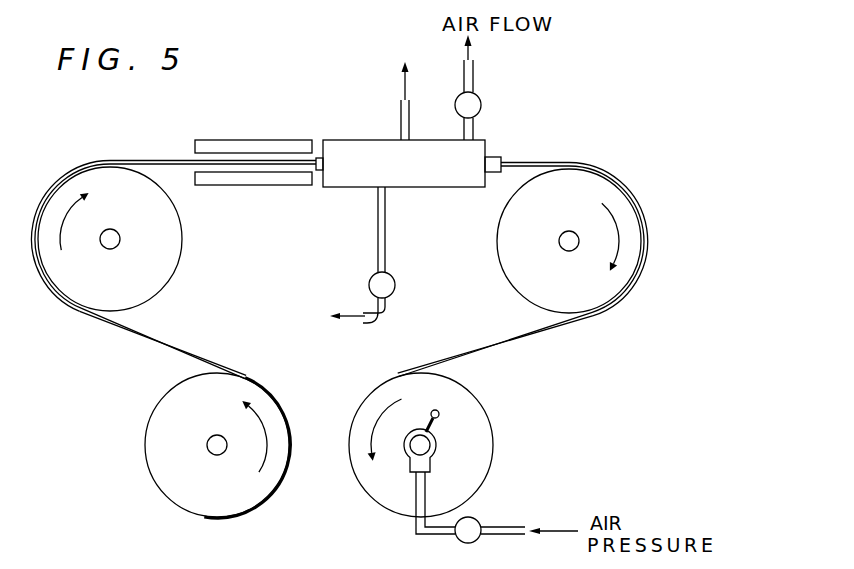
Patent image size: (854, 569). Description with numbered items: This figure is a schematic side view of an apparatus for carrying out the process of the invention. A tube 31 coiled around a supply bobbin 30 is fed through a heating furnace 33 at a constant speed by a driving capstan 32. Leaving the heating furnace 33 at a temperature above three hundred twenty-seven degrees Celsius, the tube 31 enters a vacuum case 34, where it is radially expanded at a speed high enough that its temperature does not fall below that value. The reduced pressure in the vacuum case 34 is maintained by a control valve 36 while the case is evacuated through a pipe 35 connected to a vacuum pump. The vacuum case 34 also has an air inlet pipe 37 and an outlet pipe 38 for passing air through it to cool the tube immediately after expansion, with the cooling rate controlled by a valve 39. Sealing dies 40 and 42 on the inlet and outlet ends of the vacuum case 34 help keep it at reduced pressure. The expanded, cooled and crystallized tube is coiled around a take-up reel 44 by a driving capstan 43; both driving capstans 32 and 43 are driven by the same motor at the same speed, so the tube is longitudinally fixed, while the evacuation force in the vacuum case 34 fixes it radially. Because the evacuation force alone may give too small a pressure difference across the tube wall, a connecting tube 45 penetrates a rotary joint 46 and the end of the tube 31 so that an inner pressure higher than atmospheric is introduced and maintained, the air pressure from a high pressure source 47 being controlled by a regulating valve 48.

The supply bobbin 30 is at (153, 453).
The tube 31 is at (183, 350).
The driving capstan 32 is at (162, 258).
The heating furnace 33 is at (238, 140).
The vacuum case 34 is at (358, 149).
The pipe 35 is at (388, 228).
The control valve 36 is at (395, 289).
The air inlet pipe 37 is at (474, 125).
The outlet pipe 38 is at (410, 121).
The valve 39 is at (471, 90).
The sealing die 40 is at (318, 172).
The sealing die 42 is at (494, 174).
The driving capstan 43 is at (515, 250).
The take-up reel 44 is at (478, 450).
The connecting tube 45 is at (441, 412).
The rotary joint 46 is at (437, 446).
The high pressure source 47 is at (522, 528).
The regulating valve 48 is at (478, 519).